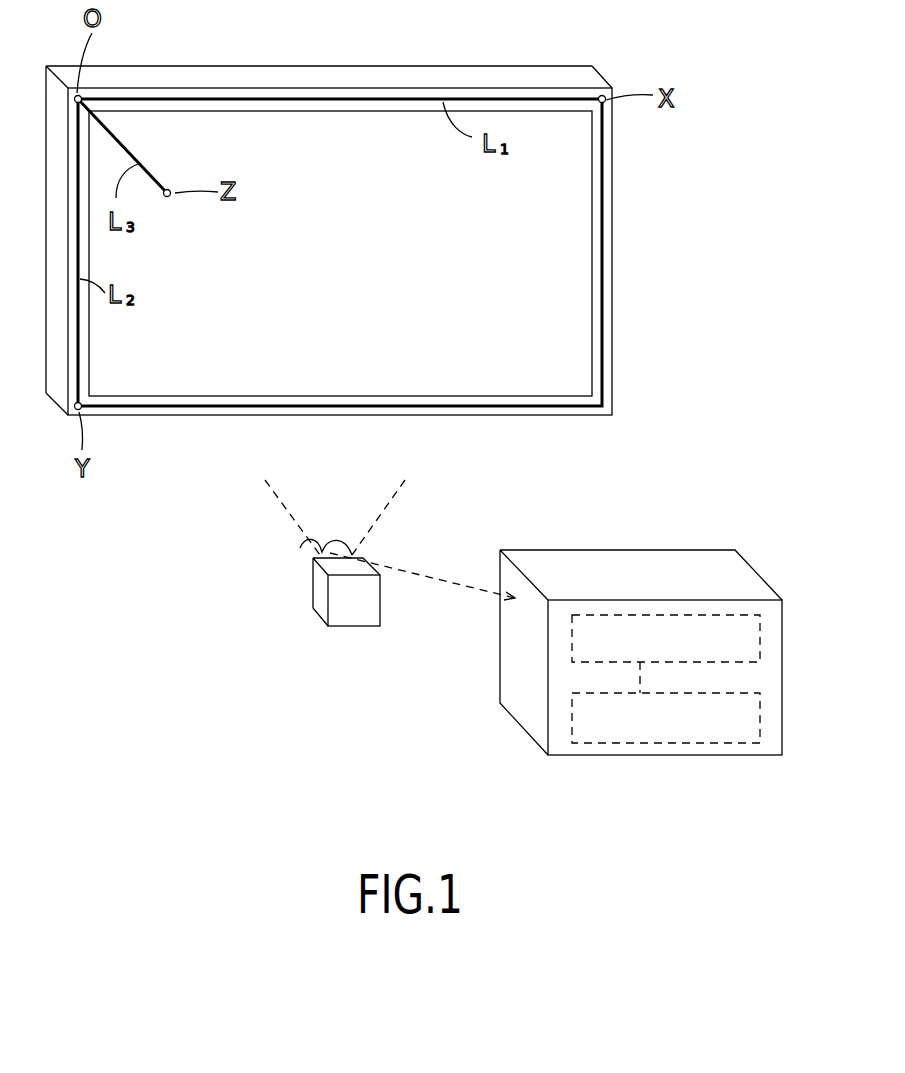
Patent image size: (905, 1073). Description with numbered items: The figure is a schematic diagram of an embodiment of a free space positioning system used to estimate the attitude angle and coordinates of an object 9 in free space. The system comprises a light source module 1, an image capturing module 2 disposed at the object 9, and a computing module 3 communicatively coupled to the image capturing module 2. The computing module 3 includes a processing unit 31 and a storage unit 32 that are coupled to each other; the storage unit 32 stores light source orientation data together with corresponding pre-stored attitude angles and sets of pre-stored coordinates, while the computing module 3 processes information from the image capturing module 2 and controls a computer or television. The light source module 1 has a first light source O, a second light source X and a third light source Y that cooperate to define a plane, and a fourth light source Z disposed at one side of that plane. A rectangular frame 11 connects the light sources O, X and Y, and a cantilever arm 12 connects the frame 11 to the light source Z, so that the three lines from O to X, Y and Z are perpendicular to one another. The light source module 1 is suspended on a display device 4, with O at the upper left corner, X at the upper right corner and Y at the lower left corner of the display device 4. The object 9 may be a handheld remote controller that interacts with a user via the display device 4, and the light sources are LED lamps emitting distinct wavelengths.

The light source module 1 is at (612, 266).
The rectangular frame 11 is at (360, 100).
The cantilever arm 12 is at (127, 146).
The display device 4 is at (188, 358).
The image capturing module 2 is at (312, 541).
The object 9 is at (357, 605).
The computing module 3 is at (649, 659).
The processing unit 31 is at (762, 637).
The storage unit 32 is at (762, 718).